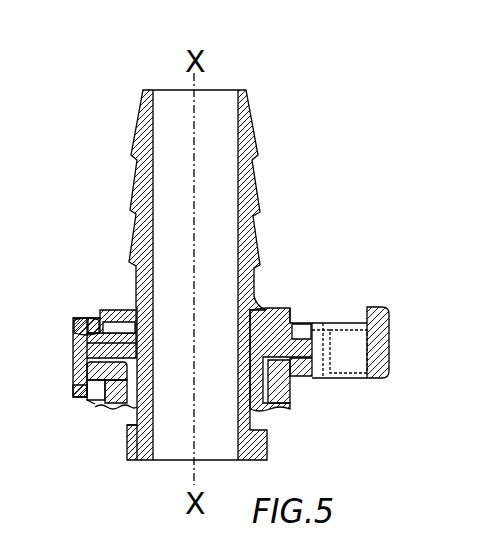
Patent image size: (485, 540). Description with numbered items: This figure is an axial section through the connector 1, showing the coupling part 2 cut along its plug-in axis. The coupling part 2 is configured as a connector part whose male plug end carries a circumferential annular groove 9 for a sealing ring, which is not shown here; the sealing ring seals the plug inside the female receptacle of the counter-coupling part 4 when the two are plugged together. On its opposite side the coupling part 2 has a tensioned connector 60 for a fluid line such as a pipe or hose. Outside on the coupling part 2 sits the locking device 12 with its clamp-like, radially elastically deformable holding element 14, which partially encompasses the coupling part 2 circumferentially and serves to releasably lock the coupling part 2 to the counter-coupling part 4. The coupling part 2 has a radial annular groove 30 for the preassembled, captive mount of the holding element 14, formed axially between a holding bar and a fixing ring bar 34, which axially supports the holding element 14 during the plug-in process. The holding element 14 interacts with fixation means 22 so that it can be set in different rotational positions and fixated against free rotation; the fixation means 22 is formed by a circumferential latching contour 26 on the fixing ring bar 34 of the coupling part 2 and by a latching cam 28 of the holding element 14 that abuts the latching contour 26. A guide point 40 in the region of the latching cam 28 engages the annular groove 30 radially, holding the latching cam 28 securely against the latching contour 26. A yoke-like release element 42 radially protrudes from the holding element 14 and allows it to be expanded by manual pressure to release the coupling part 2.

The connector 1 is at (305, 257).
The coupling part 2 is at (122, 441).
The counter-coupling part 4 is at (102, 408).
The annular groove 9 is at (258, 413).
The locking device 12 is at (54, 358).
The holding element 14 is at (70, 376).
The fixation means 22 is at (92, 306).
The latching contour 26 is at (323, 321).
The latching cam 28 is at (86, 318).
The annular groove 30 is at (102, 318).
The fixing ring bar 34 is at (288, 309).
The guide point 40 is at (80, 333).
The release element 42 is at (375, 370).
The tensioned connector 60 is at (247, 150).